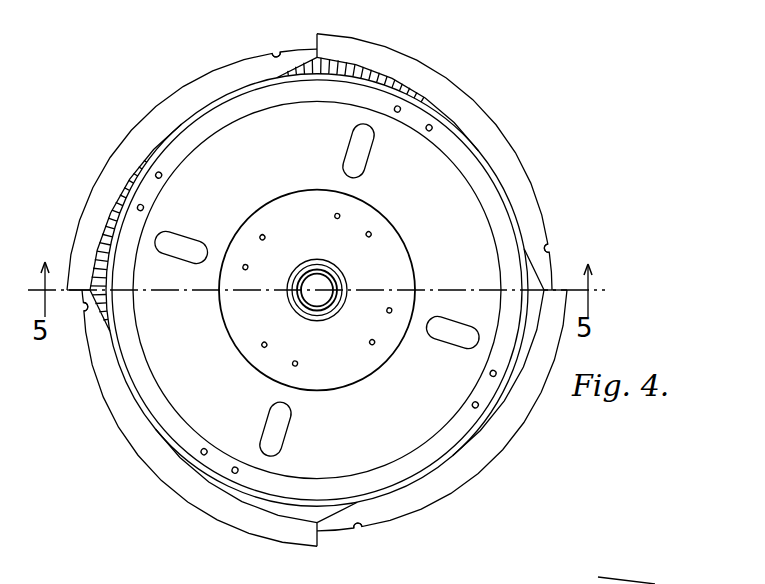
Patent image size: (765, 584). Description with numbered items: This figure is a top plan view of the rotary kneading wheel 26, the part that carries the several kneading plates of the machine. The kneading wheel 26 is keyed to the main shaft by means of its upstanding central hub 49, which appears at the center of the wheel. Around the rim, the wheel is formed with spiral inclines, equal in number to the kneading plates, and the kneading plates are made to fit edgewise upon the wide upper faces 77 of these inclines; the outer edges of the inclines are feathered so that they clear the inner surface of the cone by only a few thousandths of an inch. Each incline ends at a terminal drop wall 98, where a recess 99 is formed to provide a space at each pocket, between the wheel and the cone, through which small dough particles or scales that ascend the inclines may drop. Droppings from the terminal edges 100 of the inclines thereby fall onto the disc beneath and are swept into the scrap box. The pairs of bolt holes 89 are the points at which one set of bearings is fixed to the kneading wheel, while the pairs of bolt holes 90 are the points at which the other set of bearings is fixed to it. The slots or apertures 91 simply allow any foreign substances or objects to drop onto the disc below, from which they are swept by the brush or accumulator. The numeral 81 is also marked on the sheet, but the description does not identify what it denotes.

The kneading wheel 26 is at (393, 433).
The upstanding central hub 49 is at (338, 283).
The wide upper faces 77 is at (175, 117).
The element 81 is at (608, 575).
The pairs of bolt holes 89 is at (145, 207).
The pairs of bolt holes 90 is at (245, 265).
The slots or apertures 91 is at (173, 257).
The terminal drop walls 98 is at (305, 52).
The recesses 99 is at (289, 57).
The terminal edges 100 is at (321, 57).